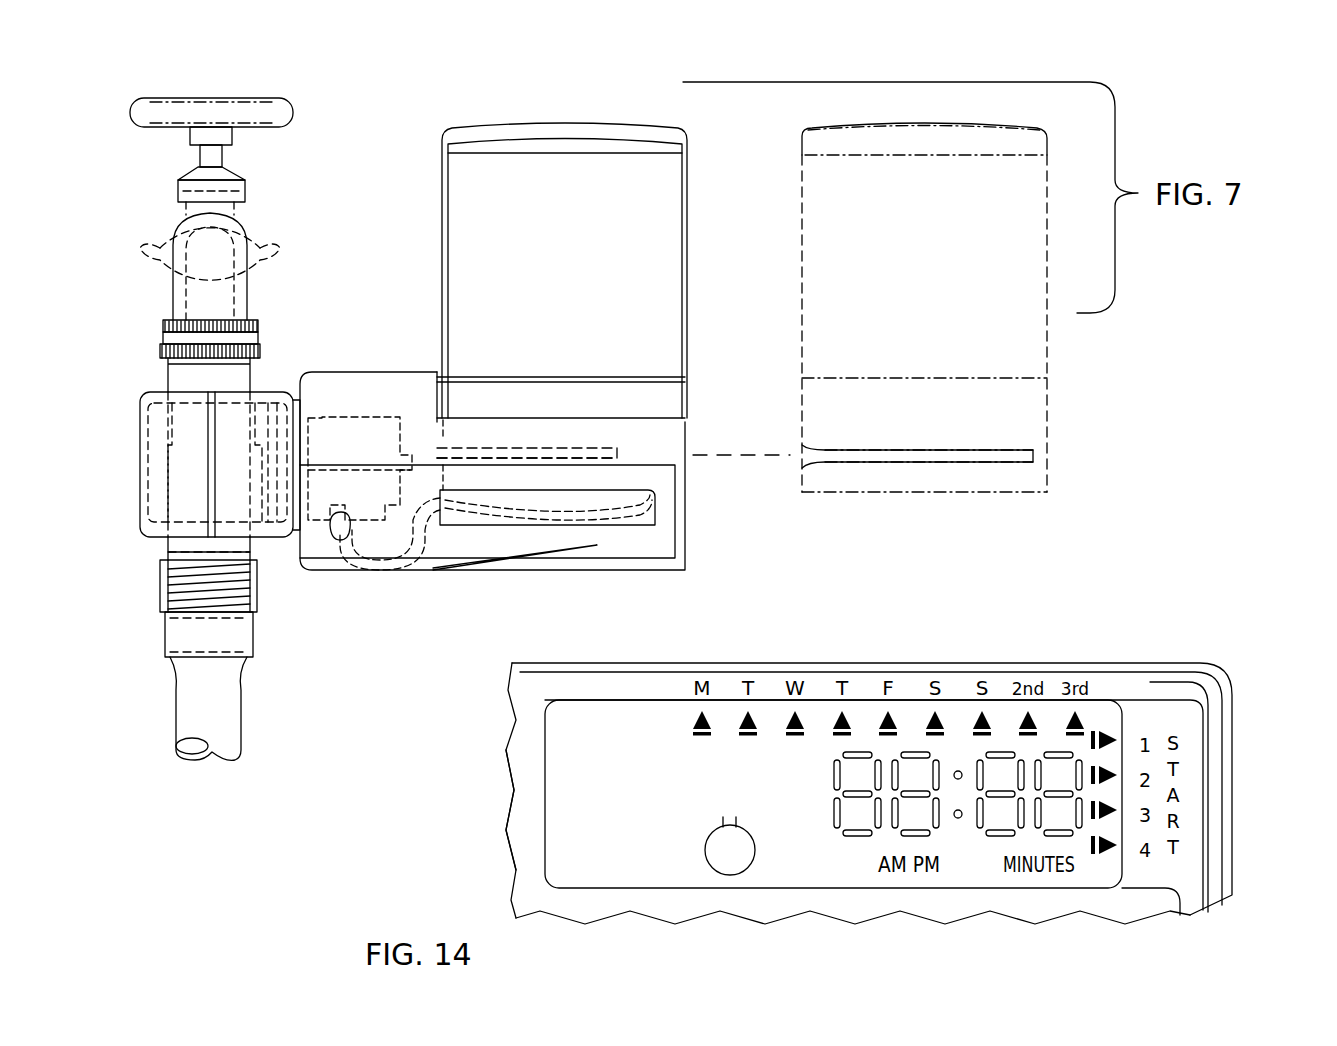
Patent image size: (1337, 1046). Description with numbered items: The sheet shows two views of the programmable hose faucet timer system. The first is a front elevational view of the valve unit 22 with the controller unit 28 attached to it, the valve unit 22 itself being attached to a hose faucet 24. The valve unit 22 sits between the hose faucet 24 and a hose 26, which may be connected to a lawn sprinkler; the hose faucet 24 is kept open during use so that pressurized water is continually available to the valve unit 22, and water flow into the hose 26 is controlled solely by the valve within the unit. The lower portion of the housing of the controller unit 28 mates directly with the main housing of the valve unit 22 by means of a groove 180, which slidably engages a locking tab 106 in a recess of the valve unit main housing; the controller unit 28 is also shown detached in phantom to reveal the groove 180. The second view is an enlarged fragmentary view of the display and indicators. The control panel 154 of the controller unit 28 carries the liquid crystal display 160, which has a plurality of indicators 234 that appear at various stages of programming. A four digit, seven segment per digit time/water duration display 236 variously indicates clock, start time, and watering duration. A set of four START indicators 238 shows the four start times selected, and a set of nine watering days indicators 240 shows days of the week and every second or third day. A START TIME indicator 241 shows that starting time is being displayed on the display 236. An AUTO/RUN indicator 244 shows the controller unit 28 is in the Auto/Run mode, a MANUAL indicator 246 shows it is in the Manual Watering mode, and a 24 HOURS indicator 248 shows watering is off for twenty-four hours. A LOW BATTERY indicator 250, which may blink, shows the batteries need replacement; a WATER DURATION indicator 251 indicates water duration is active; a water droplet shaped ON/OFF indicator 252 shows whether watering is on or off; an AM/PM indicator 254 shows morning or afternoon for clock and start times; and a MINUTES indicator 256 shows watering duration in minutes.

In FIG. 7, the valve unit 22 is at (700, 498).
In FIG. 7, the hose faucet 24 is at (240, 234).
In FIG. 7, the hose 26 is at (243, 692).
In FIG. 7, the programmable controller unit 28 is at (695, 228).
In FIG. 7, the locking tab 106 is at (572, 455).
In FIG. 14, the control panel 154 is at (512, 828).
In FIG. 14, the liquid crystal display 160 is at (1158, 694).
In FIG. 7, the groove 180 is at (1000, 458).
In FIG. 14, the indicators 234 is at (1120, 613).
In FIG. 14, the time/water duration display 236 is at (1124, 694).
In FIG. 14, the START indicators 238 is at (1242, 857).
In FIG. 14, the watering days indicators 240 is at (702, 652).
In FIG. 14, the START TIME indicator 241 is at (767, 757).
In FIG. 14, the AUTO/RUN indicator 244 is at (553, 757).
In FIG. 14, the MANUAL indicator 246 is at (553, 796).
In FIG. 14, the 24 HOURS indicator 248 is at (547, 830).
In FIG. 14, the LOW BATTERY indicator 250 is at (548, 868).
In FIG. 14, the WATER DURATION indicator 251 is at (667, 810).
In FIG. 14, the ON/OFF indicator 252 is at (752, 868).
In FIG. 14, the AM/PM indicator 254 is at (903, 886).
In FIG. 14, the MINUTES indicator 256 is at (1046, 886).